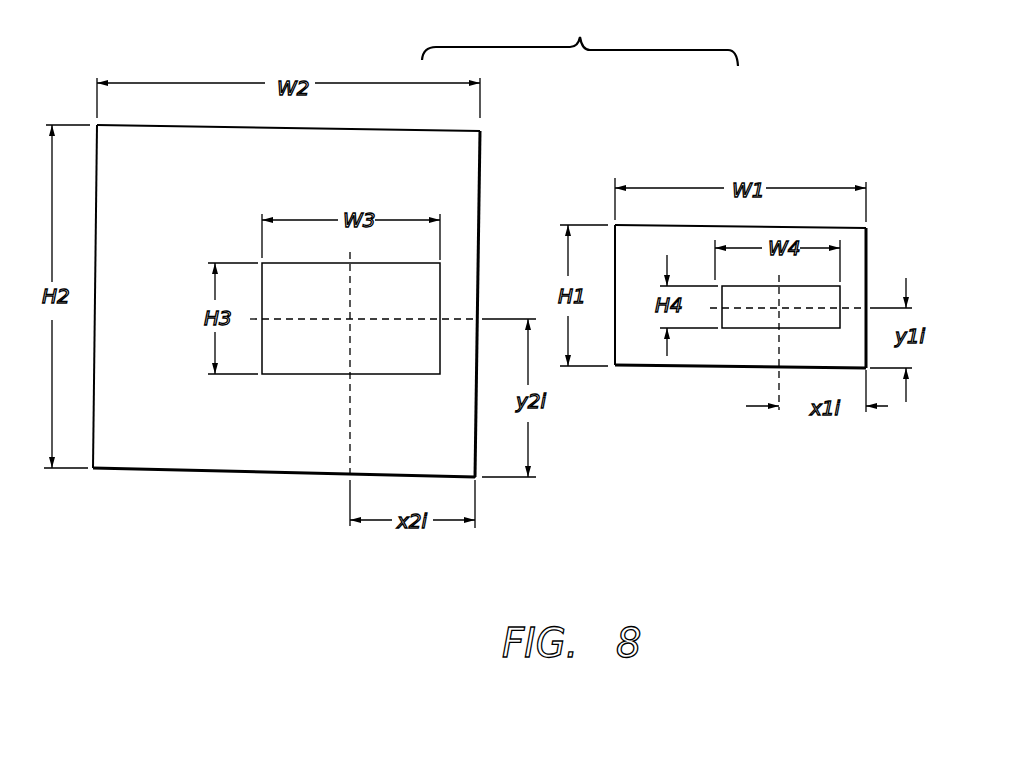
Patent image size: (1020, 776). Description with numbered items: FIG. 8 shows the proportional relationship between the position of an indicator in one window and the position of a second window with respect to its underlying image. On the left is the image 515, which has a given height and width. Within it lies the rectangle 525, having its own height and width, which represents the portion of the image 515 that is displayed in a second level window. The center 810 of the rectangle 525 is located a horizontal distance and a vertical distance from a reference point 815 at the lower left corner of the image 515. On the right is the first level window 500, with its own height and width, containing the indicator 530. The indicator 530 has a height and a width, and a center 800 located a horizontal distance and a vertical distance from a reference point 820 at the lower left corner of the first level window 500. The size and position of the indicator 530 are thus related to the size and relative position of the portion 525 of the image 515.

The first level window 500 is at (867, 290).
The image 515 is at (481, 166).
The rectangle 525 is at (293, 374).
The indicator 530 is at (762, 328).
The center 800 is at (779, 308).
The center 810 is at (350, 319).
The reference point 815 is at (476, 478).
The reference point 820 is at (867, 369).